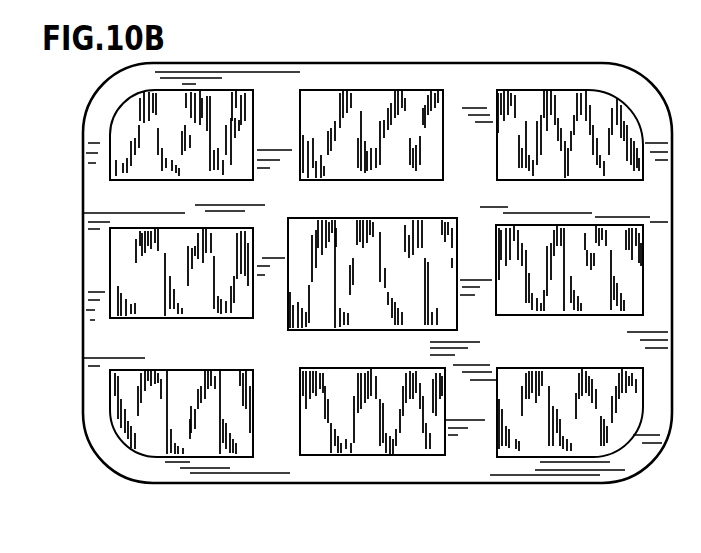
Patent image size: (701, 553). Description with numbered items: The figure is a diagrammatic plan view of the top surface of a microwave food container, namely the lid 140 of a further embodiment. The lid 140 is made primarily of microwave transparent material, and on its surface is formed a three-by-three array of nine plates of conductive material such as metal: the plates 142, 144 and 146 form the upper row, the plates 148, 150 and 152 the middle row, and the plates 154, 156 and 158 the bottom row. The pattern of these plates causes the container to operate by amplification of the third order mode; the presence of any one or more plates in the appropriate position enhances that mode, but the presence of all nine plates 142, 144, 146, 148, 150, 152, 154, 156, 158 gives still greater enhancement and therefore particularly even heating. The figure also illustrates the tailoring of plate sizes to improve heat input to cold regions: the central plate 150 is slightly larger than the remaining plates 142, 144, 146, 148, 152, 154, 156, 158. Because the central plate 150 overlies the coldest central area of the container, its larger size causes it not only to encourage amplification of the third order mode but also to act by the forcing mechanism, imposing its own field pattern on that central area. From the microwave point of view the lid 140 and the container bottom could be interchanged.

The lid 140 is at (467, 63).
The plate 142 is at (208, 181).
The plate 144 is at (405, 181).
The plate 146 is at (610, 181).
The plate 148 is at (218, 319).
The central plate 150 is at (415, 331).
The plate 152 is at (608, 316).
The plate 154 is at (207, 458).
The plate 156 is at (415, 456).
The plate 158 is at (610, 458).